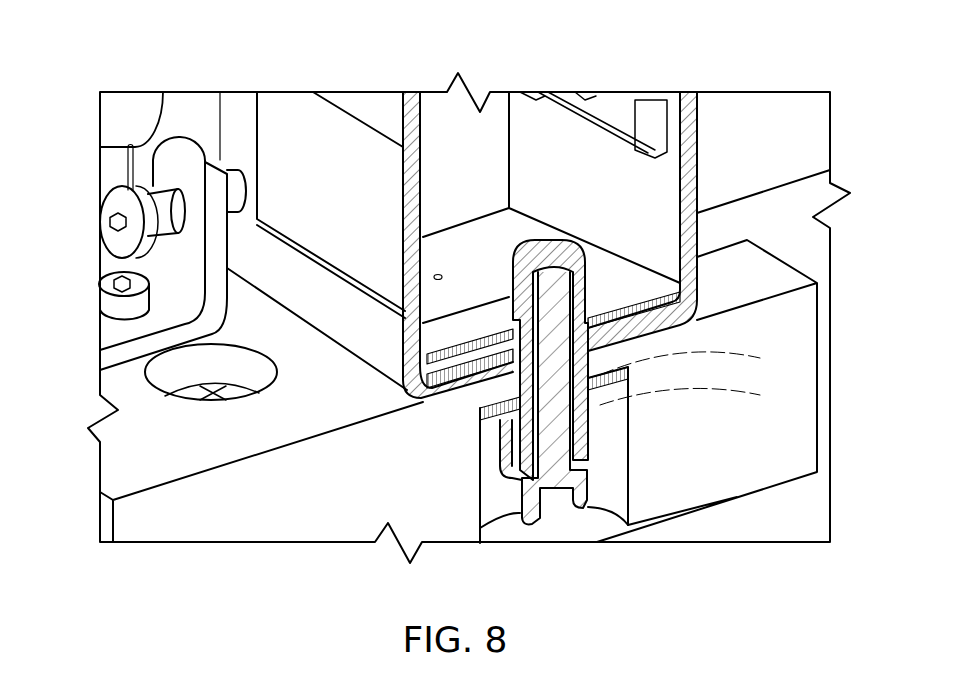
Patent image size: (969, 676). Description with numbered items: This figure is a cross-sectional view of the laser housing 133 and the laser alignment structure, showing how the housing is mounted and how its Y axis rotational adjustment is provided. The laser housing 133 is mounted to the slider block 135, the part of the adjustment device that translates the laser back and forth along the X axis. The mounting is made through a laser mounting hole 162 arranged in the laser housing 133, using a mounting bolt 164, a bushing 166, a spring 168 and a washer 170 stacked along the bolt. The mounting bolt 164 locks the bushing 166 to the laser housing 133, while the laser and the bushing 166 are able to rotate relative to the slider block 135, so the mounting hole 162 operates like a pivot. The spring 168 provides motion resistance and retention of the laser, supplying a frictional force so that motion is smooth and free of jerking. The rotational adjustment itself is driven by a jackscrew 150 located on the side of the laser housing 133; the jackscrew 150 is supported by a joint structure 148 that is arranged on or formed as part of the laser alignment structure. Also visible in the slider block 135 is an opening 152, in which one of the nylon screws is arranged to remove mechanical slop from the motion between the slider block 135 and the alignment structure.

The laser housing 133 is at (387, 112).
The slider block 135 is at (760, 270).
The joint structure 148 is at (163, 173).
The jackscrew 150 is at (100, 210).
The opening 152 is at (240, 397).
The laser mounting hole 162 is at (515, 388).
The mounting bolt 164 is at (563, 495).
The bushing 166 is at (593, 462).
The spring 168 is at (597, 412).
The washer 170 is at (760, 358).